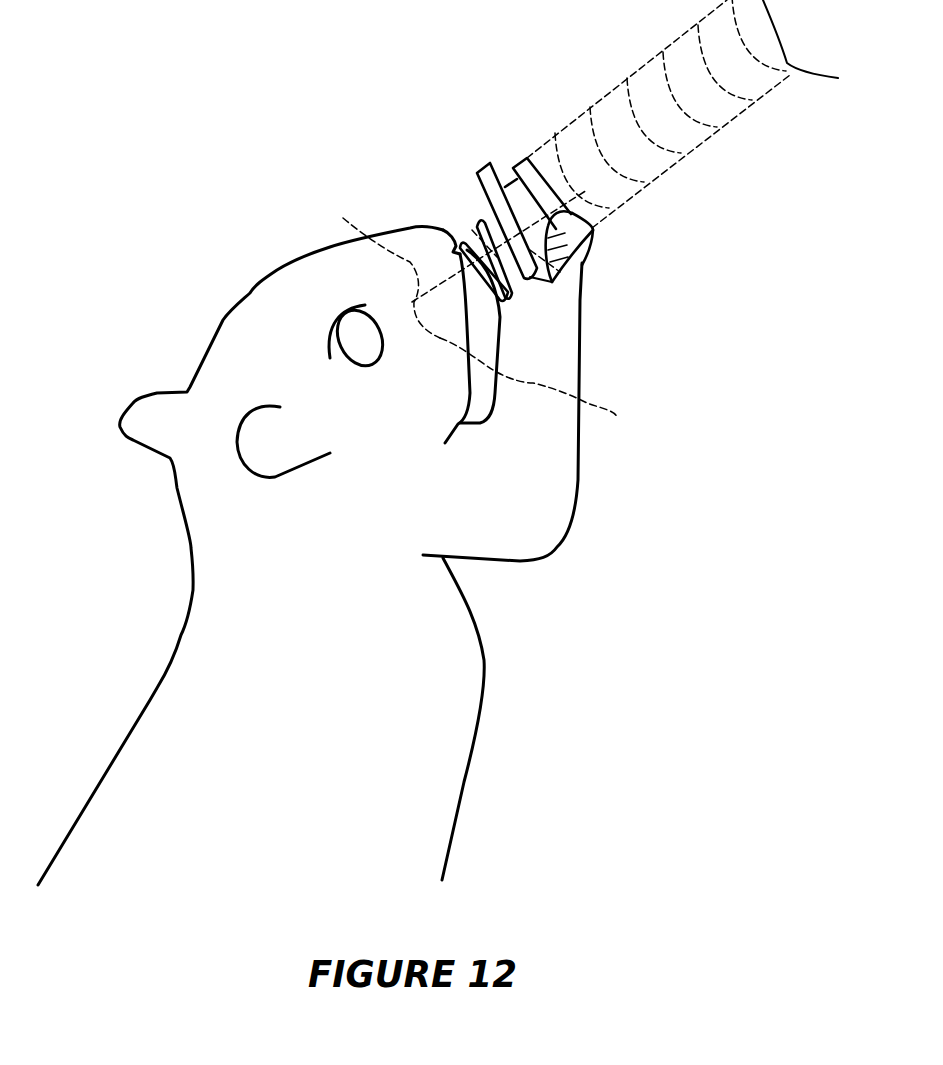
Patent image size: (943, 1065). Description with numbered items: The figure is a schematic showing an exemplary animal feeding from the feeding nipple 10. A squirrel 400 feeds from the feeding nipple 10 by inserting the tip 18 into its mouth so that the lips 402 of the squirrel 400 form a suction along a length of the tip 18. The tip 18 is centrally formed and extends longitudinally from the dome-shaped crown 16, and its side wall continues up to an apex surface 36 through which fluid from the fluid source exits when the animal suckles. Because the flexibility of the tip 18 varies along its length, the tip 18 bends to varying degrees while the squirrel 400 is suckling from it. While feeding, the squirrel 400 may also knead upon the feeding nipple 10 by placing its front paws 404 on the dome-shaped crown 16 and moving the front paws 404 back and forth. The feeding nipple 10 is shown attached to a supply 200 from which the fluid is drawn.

The feeding nipple 10 is at (502, 150).
The dome-shaped crown 16 is at (480, 222).
The tip 18 is at (343, 218).
The apex surface 36 is at (617, 417).
The supply tube 200 is at (688, 175).
The squirrel 400 is at (181, 324).
The lips 402 is at (440, 222).
The front paws 404 is at (537, 278).